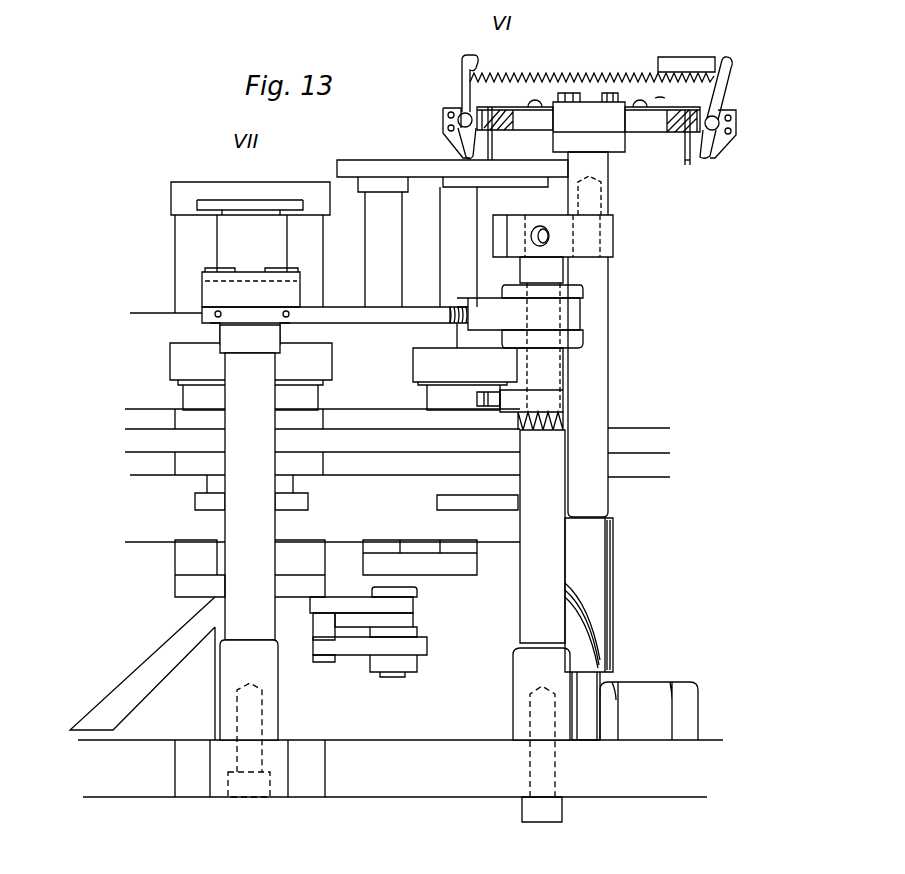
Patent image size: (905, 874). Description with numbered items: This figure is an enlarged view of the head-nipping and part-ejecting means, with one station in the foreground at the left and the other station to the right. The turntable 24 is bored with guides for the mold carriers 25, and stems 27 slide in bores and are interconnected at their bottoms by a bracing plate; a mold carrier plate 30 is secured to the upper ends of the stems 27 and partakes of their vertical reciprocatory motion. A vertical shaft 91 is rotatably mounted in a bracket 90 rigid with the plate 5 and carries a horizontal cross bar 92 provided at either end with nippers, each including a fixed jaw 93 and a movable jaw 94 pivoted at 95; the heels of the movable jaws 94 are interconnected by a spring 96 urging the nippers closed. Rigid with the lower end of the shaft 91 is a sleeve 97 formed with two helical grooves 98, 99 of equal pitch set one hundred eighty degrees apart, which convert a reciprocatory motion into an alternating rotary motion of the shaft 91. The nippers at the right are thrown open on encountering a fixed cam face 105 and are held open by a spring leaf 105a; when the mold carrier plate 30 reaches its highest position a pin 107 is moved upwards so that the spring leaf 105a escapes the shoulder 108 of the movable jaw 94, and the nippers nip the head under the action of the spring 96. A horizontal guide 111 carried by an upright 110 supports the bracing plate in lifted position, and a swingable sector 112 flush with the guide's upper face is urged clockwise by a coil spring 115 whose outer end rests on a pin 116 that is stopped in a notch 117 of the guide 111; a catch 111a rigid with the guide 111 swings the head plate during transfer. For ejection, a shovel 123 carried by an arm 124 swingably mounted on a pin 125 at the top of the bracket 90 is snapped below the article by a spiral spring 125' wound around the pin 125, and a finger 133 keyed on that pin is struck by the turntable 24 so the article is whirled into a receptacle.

The plate 5 is at (400, 768).
The turntable 24 is at (384, 470).
The mold carrier 25 is at (185, 398).
The stem 27 is at (303, 250).
The mold carrier plate 30 is at (183, 185).
The bracket 90 is at (540, 445).
The vertical shaft 91 is at (595, 346).
The horizontal cross bar 92 is at (522, 120).
The fixed jaw 93 is at (447, 140).
The movable jaw 94 is at (473, 155).
The pivot 95 is at (460, 114).
The spring 96 is at (584, 70).
The sleeve 97 is at (585, 629).
The helical groove 98 is at (610, 568).
The helical groove 99 is at (593, 620).
The fixed cam face 105 is at (658, 60).
The spring leaf 105a is at (666, 97).
The pin 107 is at (686, 160).
The shoulder 108 is at (707, 107).
The upright 110 is at (250, 560).
The horizontal guide 111 is at (292, 593).
The catch 111a is at (160, 666).
The sector 112 is at (322, 606).
The coil spring 115 is at (352, 648).
The pin 116 is at (314, 632).
The notch 117 is at (346, 624).
The shovel 123 is at (251, 287).
The arm 124 is at (412, 320).
The pin 125 is at (573, 380).
The spiral spring 125' is at (540, 445).
The finger 133 is at (477, 402).